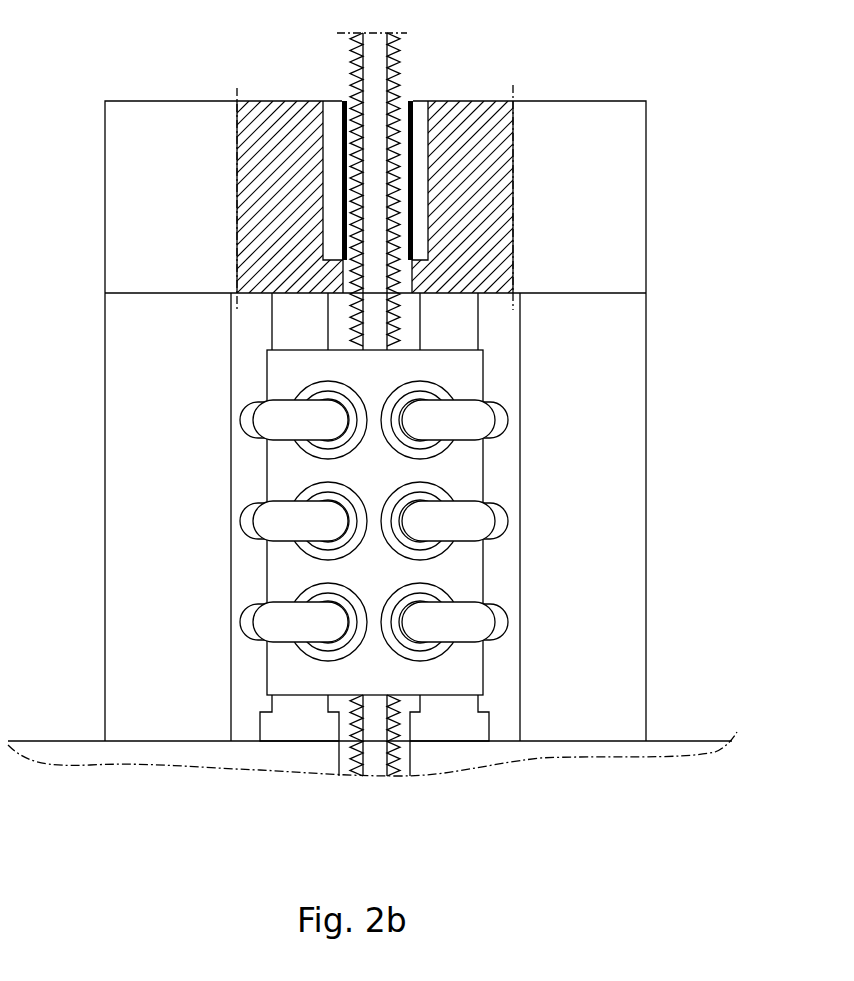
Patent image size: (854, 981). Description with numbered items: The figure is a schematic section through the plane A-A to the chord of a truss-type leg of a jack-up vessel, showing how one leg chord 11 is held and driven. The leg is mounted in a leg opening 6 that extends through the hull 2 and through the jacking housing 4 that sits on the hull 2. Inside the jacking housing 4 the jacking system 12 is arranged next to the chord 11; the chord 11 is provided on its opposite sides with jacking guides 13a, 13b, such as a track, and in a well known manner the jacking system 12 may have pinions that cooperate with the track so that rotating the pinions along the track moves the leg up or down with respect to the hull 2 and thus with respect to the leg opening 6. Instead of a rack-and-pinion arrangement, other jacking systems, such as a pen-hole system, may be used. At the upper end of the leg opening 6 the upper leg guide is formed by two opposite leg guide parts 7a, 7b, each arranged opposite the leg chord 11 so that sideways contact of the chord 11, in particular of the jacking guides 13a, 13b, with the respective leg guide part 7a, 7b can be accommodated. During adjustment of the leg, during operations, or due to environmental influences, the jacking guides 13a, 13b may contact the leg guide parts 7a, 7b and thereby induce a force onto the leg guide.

The hull 2 is at (53, 757).
The jacking housing 4 is at (130, 205).
The leg opening 6 is at (500, 693).
The leg guide part 7a is at (331, 119).
The leg guide part 7b is at (418, 118).
The chord 11 is at (375, 330).
The jacking system 12 is at (462, 385).
The jacking guide 13a is at (348, 43).
The jacking guide 13b is at (402, 43).